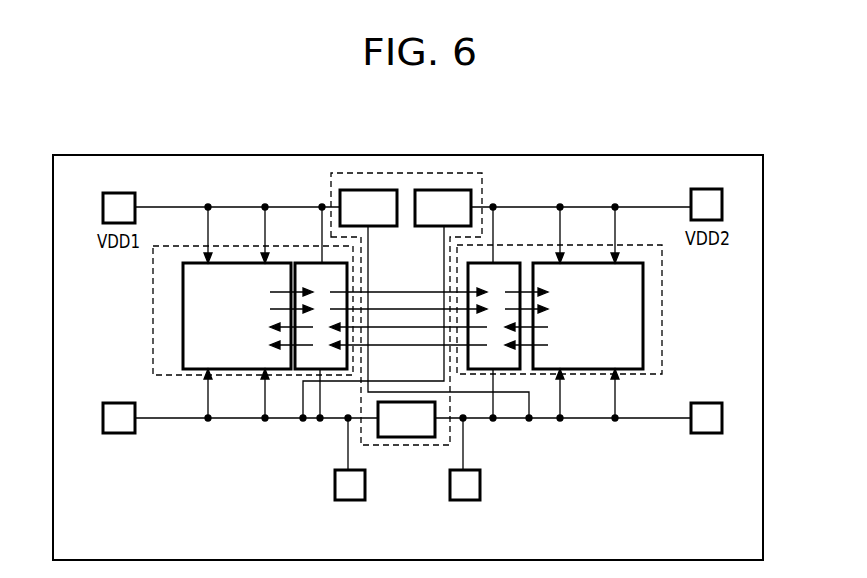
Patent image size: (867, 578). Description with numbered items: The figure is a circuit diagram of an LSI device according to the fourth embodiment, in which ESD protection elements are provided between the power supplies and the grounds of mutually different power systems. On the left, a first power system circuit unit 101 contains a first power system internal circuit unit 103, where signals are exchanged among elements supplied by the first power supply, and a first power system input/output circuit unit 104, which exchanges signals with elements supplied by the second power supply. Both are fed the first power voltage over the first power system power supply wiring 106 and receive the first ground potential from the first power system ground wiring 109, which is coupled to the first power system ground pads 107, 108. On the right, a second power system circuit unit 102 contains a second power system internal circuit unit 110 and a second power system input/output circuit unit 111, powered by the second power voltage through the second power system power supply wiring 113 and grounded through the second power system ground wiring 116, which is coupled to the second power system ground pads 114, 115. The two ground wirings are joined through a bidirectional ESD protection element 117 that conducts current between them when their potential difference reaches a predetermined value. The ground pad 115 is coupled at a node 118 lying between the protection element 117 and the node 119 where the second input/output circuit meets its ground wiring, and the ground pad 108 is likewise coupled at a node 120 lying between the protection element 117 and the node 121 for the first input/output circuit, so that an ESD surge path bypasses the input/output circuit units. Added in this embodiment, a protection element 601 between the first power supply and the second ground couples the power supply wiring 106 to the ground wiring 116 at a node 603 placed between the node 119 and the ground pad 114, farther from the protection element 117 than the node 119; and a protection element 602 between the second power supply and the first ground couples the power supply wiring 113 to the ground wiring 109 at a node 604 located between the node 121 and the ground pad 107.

The first power system circuit unit 101 is at (153, 322).
The second power system circuit unit 102 is at (662, 270).
The first power system internal circuit unit 103 is at (182, 284).
The first power system input/output circuit unit 104 is at (300, 263).
The first power system power supply wiring 106 is at (231, 207).
The first power system ground pad 107 is at (122, 403).
The first power system ground pad 108 is at (365, 483).
The first power system ground wiring 109 is at (232, 419).
The second power system internal circuit unit 110 is at (643, 335).
The second power system input/output circuit unit 111 is at (507, 263).
The second power system power supply wiring 113 is at (578, 207).
The second power system ground pad 114 is at (706, 403).
The second power system ground pad 115 is at (480, 483).
The second power system ground wiring 116 is at (602, 419).
The ESD protection element 117 is at (408, 437).
The node 118 is at (463, 419).
The node 119 is at (493, 419).
The node 120 is at (348, 419).
The node 121 is at (320, 419).
The protection element between VDD1 and GND2 601 is at (363, 190).
The protection element between VDD2 and GND1 602 is at (440, 190).
The node 603 is at (529, 419).
The node 604 is at (302, 419).